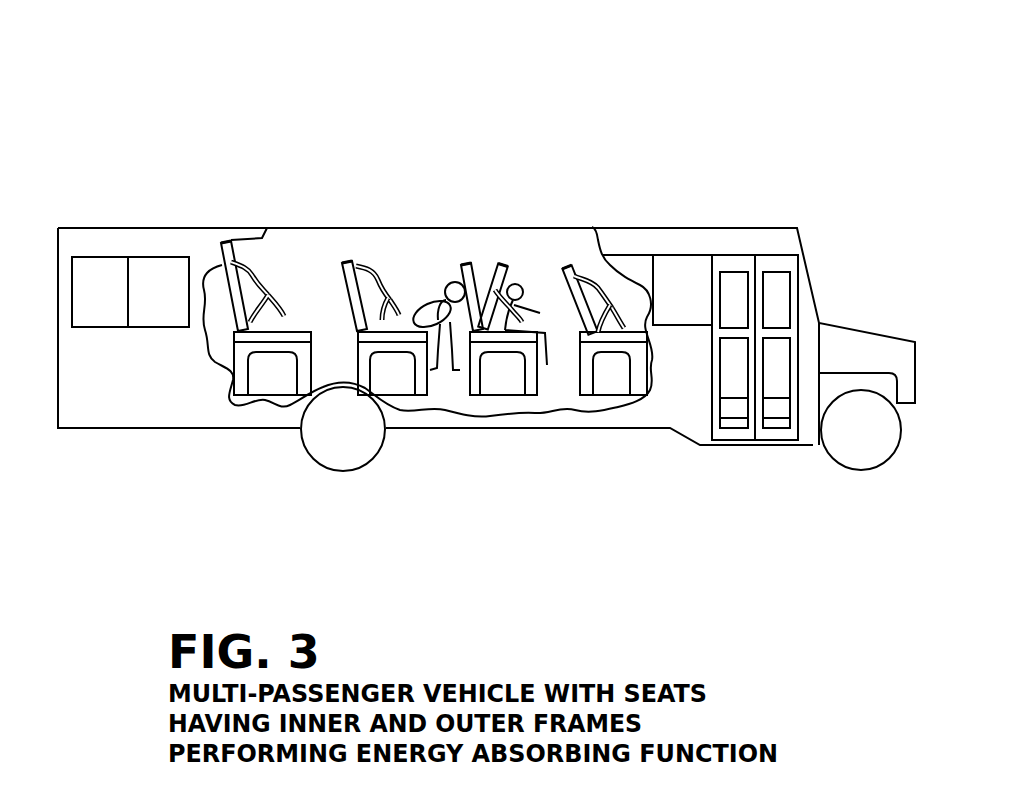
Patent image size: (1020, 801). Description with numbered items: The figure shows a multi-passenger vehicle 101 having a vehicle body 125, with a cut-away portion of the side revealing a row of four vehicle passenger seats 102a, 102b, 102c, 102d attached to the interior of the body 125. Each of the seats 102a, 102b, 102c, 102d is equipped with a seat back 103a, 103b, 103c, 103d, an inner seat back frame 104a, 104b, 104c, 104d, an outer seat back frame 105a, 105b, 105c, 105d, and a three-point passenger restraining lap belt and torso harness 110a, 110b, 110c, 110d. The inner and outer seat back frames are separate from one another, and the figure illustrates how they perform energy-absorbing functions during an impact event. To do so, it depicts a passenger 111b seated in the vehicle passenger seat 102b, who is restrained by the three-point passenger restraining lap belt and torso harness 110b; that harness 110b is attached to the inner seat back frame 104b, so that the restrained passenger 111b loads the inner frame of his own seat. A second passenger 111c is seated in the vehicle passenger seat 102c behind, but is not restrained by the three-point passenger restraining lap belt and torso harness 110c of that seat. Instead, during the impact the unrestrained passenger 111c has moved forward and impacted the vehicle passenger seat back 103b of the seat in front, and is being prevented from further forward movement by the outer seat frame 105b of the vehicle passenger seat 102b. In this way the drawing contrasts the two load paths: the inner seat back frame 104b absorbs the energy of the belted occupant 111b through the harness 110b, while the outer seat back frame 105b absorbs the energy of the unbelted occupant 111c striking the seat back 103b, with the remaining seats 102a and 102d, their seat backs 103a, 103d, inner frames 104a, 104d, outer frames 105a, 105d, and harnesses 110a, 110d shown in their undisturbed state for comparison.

The multi-passenger vehicle 101 is at (738, 226).
The vehicle body 125 is at (152, 403).
The vehicle passenger seat 102a is at (608, 346).
The vehicle passenger seat 102b is at (500, 348).
The vehicle passenger seat 102c is at (385, 346).
The vehicle passenger seat 102d is at (260, 346).
The seat back 103a is at (574, 320).
The seat back 103b is at (477, 278).
The seat back 103c is at (357, 283).
The seat back 103d is at (245, 297).
The inner seat back frame 104a is at (588, 292).
The inner seat back frame 104b is at (498, 263).
The inner seat back frame 104c is at (353, 263).
The inner seat back frame 104d is at (232, 257).
The outer seat back frame 105a is at (566, 290).
The outer seat back frame 105b is at (463, 262).
The outer seat back frame 105c is at (340, 262).
The outer seat back frame 105d is at (216, 268).
The three-point passenger restraining lap belt and torso harness 110a is at (609, 296).
The three-point passenger restraining lap belt and torso harness 110b is at (519, 310).
The three-point passenger restraining lap belt and torso harness 110c is at (381, 285).
The three-point passenger restraining lap belt and torso harness 110d is at (281, 297).
The passenger 111b is at (515, 282).
The passenger 111c is at (433, 300).